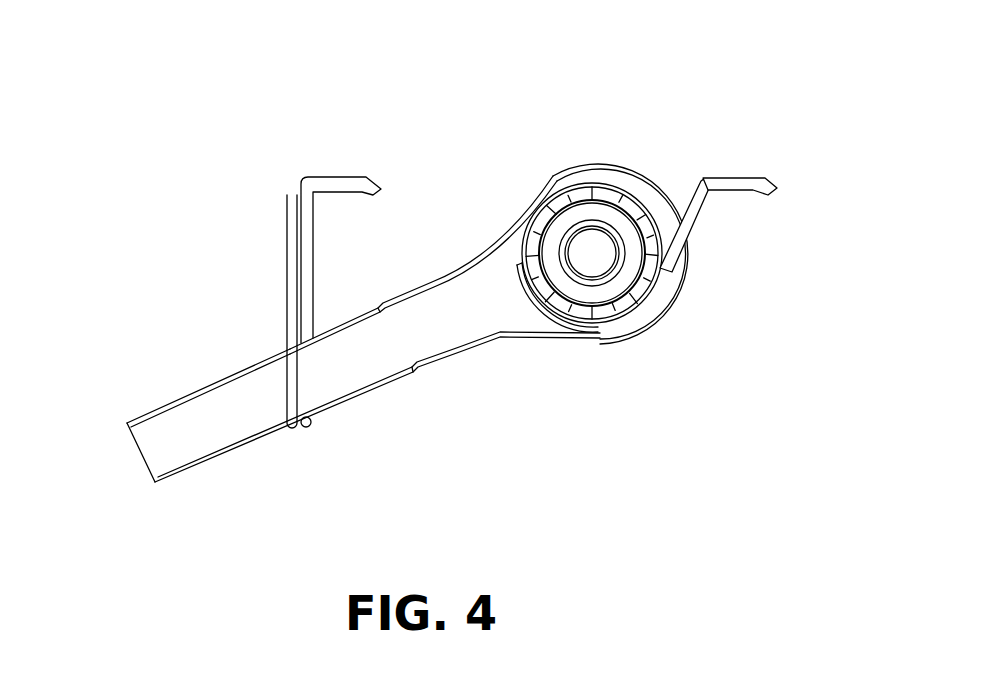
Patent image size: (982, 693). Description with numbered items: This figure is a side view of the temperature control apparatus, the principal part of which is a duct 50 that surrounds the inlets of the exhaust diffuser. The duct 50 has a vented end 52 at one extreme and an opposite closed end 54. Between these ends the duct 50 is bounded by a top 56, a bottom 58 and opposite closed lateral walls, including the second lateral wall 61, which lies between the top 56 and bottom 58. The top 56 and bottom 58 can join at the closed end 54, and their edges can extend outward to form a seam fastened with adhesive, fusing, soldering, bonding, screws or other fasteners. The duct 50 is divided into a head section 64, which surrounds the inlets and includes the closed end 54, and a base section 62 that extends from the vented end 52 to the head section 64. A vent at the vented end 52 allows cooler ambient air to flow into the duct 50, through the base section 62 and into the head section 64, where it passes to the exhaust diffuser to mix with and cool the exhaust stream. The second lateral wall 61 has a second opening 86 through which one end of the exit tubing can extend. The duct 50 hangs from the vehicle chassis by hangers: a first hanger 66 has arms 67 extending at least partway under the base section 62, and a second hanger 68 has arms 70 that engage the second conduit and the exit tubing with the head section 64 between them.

The duct 50 is at (410, 94).
The vented end 52 is at (143, 458).
The closed end 54 is at (670, 182).
The top 56 is at (424, 290).
The bottom 58 is at (490, 350).
The second lateral wall 61 is at (385, 355).
The base section 62 is at (185, 420).
The head section 64 is at (550, 180).
The first hanger 66 is at (292, 215).
The arms 67 is at (287, 437).
The second hanger 68 is at (731, 182).
The arms 70 is at (602, 323).
The second opening 86 is at (585, 182).